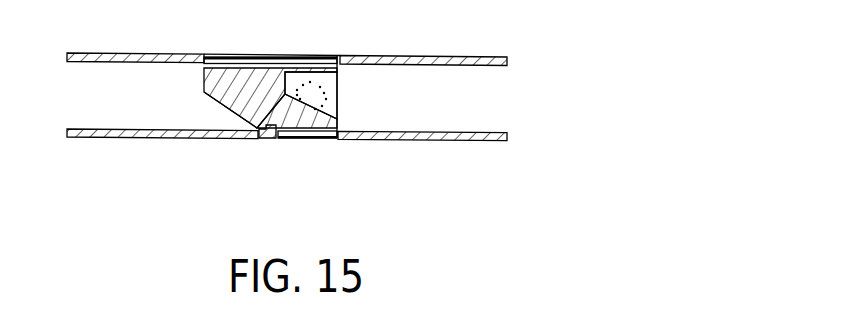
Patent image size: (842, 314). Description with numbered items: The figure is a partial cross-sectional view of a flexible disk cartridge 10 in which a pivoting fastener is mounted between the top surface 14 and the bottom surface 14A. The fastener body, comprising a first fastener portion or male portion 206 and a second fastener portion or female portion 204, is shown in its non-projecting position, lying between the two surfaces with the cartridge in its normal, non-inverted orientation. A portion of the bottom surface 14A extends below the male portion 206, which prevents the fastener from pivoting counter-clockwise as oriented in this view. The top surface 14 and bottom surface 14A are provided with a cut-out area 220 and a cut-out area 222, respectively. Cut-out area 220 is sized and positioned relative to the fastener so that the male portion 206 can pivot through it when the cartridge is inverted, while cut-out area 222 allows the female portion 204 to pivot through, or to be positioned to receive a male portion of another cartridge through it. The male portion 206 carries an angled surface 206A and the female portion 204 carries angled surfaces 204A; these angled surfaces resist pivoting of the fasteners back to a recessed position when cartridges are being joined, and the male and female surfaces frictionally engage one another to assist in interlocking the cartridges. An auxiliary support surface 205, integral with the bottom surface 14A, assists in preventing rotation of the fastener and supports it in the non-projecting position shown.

The flexible disk cartridge 10 is at (528, 93).
The top surface 14 is at (463, 53).
The bottom surface 14A is at (462, 142).
The cut-out area 220 is at (323, 45).
The cut-out area 222 is at (316, 152).
The male portion 206 is at (203, 78).
The angled surface 206A is at (232, 104).
The female portion 204 is at (358, 84).
The angled surfaces 204A is at (330, 120).
The auxiliary support surface 205 is at (243, 139).